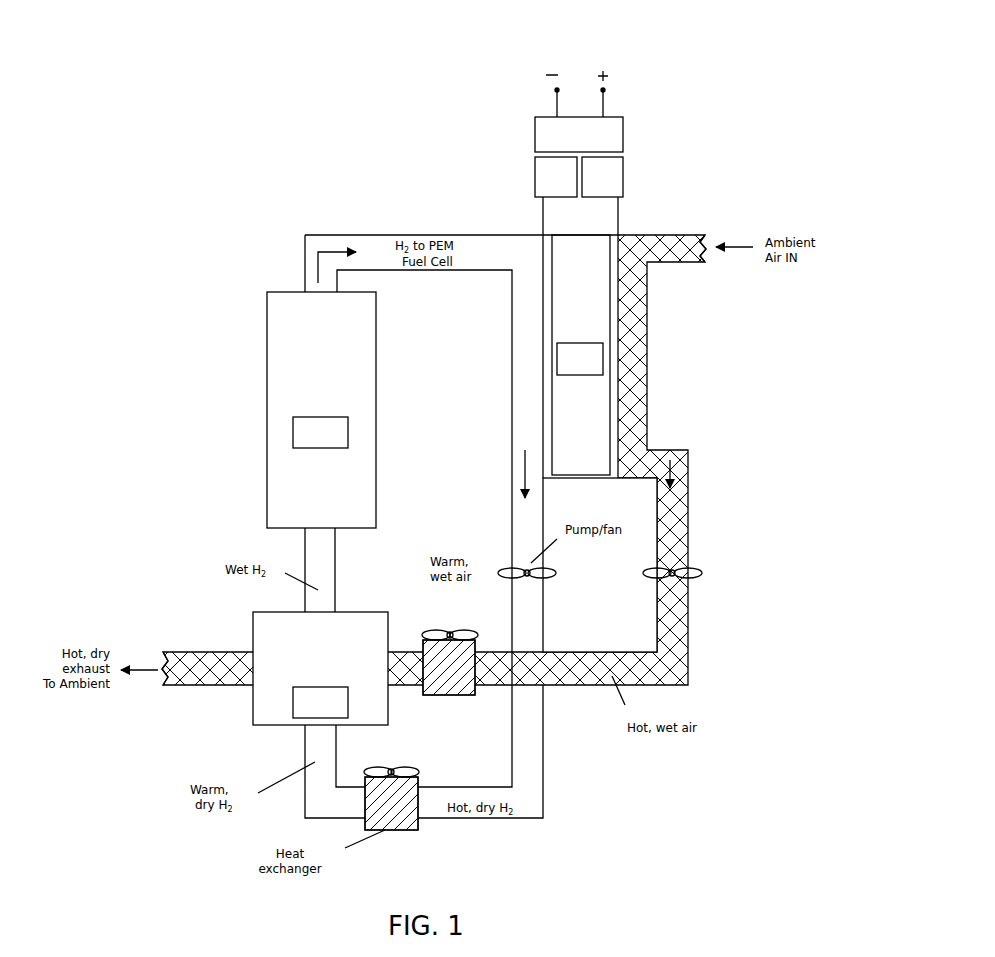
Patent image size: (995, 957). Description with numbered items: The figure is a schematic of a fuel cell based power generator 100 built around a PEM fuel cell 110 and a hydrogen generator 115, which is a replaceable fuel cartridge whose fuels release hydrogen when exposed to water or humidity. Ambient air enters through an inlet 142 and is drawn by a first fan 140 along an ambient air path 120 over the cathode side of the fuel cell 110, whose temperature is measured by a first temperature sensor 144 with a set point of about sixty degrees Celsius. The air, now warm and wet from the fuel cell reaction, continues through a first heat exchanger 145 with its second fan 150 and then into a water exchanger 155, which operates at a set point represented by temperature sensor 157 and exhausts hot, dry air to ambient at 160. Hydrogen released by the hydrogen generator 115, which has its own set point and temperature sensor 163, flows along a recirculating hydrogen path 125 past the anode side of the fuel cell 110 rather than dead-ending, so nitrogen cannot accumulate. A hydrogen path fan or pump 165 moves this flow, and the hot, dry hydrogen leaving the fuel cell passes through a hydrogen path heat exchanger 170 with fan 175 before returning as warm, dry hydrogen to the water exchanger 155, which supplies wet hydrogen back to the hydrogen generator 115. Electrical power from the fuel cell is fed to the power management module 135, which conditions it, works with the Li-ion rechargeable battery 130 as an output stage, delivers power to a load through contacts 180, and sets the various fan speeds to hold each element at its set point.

The fuel cell based power generator 100 is at (112, 83).
The fuel cell 110 is at (610, 311).
The hydrogen generator 115 is at (267, 372).
The ambient air path 120 is at (647, 401).
The recirculating hydrogen path 125 is at (512, 352).
The Li-ion rechargeable battery 130 is at (608, 178).
The power management module 135 is at (623, 133).
The first fan 140 is at (690, 565).
The inlet 142 is at (708, 253).
The first temperature sensor 144 is at (603, 358).
The first heat exchanger 145 is at (452, 697).
The second fan 150 is at (437, 633).
The water exchanger 155 is at (388, 612).
The water exchanger temperature sensor 157 is at (293, 700).
The exhaust to ambient 160 is at (165, 656).
The hydrogen generator temperature sensor 163 is at (293, 433).
The hydrogen path fan or pump 165 is at (500, 562).
The hydrogen path heat exchanger 170 is at (400, 830).
The fan 175 is at (410, 775).
The contacts 180 is at (605, 89).